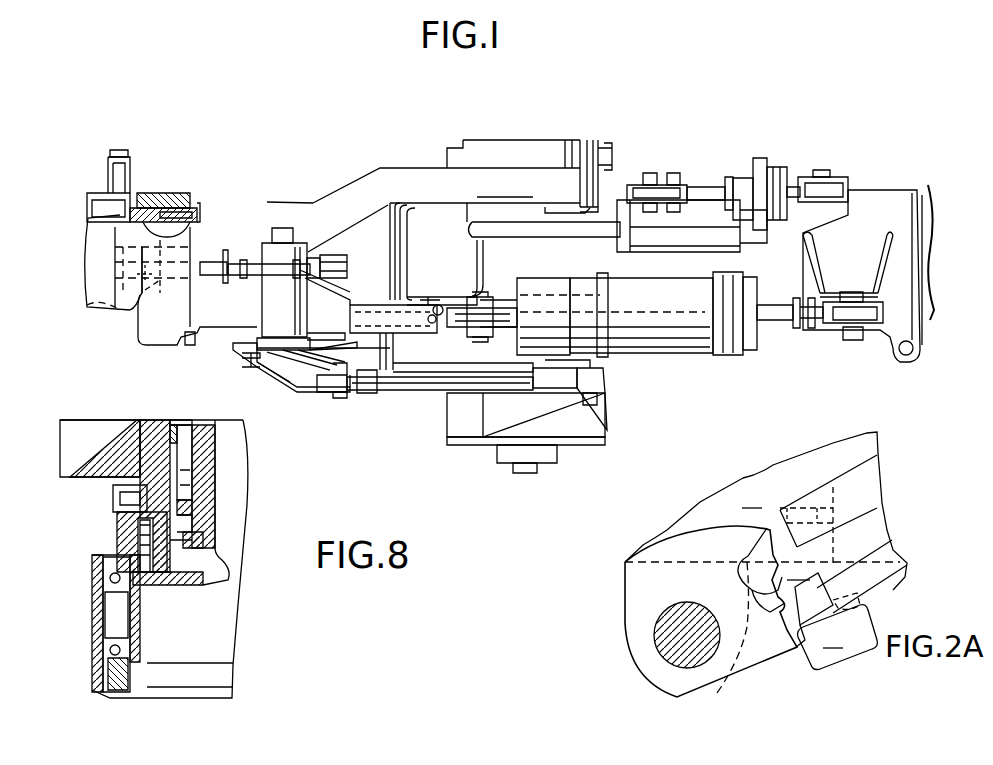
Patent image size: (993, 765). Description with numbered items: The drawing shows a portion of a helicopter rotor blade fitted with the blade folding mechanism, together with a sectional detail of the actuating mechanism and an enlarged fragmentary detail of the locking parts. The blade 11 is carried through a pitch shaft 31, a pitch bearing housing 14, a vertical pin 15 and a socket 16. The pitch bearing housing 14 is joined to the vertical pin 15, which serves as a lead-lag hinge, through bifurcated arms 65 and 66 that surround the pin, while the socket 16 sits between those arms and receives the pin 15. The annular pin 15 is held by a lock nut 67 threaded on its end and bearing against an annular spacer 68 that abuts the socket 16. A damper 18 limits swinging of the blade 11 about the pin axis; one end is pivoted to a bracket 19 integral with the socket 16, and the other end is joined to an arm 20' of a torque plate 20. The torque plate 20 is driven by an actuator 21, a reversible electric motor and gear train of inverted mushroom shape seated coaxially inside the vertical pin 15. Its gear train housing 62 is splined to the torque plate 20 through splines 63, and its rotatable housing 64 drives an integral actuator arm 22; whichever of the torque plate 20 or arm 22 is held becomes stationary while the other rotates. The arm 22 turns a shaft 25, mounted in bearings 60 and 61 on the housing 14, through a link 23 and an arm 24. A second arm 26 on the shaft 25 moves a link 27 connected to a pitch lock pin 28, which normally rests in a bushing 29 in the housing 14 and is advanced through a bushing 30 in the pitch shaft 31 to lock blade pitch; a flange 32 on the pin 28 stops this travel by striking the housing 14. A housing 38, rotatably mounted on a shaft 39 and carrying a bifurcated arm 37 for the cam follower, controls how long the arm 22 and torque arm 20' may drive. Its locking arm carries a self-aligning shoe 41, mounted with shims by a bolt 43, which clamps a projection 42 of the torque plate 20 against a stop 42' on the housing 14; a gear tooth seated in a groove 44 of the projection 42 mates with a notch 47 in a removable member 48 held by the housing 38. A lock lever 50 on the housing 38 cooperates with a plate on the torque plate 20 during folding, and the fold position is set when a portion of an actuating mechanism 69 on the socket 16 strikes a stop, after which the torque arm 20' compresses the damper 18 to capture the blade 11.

In FIG. 1, the blade 11 is at (928, 204).
In FIG. 1, the pitch bearing housing 14 is at (198, 204).
In FIG. 2A, the pitch bearing housing 14 is at (766, 511).
In FIG. 8, the vertical pin 15 is at (207, 455).
In FIG. 1, the socket 16 is at (873, 185).
In FIG. 1, the damper 18 is at (695, 350).
In FIG. 1, the bracket 19 is at (883, 302).
In FIG. 8, the torque plate 20 is at (170, 554).
In FIG. 1, the arm of torque plate 20' is at (489, 290).
In FIG. 1, the actuator 21 is at (608, 428).
In FIG. 8, the actuator 21 is at (227, 497).
In FIG. 1, the actuator arm 22 is at (605, 398).
In FIG. 1, the link 23 is at (407, 388).
In FIG. 1, the arm 24 is at (282, 382).
In FIG. 1, the shaft 25 is at (267, 310).
In FIG. 1, the second arm 26 is at (337, 262).
In FIG. 1, the link 27 is at (272, 228).
In FIG. 1, the pitch lock pin 28 is at (197, 286).
In FIG. 1, the bushing 29 is at (137, 322).
In FIG. 1, the bushing 30 is at (112, 272).
In FIG. 1, the pitch shaft 31 is at (180, 238).
In FIG. 1, the flange 32 is at (232, 260).
In FIG. 1, the bifurcated arm 37 is at (333, 342).
In FIG. 2A, the housing 38 is at (695, 545).
In FIG. 2A, the shaft 39 is at (663, 632).
In FIG. 2A, the self-aligning shoe 41 is at (838, 631).
In FIG. 2A, the projection 42 is at (792, 617).
In FIG. 2A, the stop 42' is at (806, 534).
In FIG. 1, the bolt 43 is at (442, 333).
In FIG. 2A, the groove 44 is at (866, 553).
In FIG. 2A, the notch 47 is at (775, 590).
In FIG. 2A, the removable member 48 is at (755, 572).
In FIG. 1, the lock lever 50 is at (446, 296).
In FIG. 1, the bearing 60 is at (308, 258).
In FIG. 1, the bearing 61 is at (237, 347).
In FIG. 8, the gear train housing 62 is at (93, 588).
In FIG. 8, the splines 63 is at (163, 572).
In FIG. 8, the rotatable housing 64 is at (92, 618).
In FIG. 1, the bifurcated arm 65 is at (460, 220).
In FIG. 1, the bifurcated arm 66 is at (467, 350).
In FIG. 8, the lock nut 67 is at (197, 560).
In FIG. 8, the annular spacer 68 is at (193, 410).
In FIG. 1, the actuating mechanism 69 is at (728, 172).